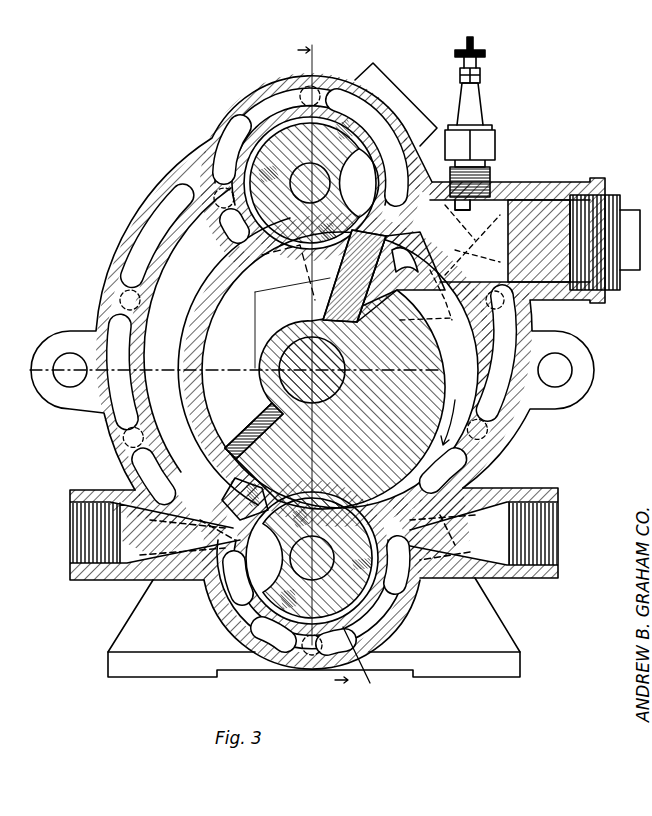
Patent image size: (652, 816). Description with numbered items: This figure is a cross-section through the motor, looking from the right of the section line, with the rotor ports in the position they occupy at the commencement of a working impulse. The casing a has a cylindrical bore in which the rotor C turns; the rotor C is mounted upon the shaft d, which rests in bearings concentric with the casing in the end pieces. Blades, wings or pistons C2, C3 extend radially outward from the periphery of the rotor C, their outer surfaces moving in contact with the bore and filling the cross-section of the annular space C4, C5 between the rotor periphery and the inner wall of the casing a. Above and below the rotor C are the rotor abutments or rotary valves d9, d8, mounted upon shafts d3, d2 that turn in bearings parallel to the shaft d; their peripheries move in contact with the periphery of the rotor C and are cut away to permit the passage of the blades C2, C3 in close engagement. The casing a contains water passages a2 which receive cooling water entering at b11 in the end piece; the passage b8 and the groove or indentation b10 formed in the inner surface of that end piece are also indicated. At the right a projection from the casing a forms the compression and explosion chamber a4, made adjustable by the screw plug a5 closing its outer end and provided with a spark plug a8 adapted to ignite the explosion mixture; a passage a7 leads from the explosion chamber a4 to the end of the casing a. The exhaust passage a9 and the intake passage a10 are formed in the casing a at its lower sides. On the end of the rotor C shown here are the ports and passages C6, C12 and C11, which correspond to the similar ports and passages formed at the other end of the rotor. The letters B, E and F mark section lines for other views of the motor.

The casing a is at (318, 375).
The water passages a2 is at (150, 243).
The explosion chamber a4 is at (505, 210).
The screw plug a5 is at (602, 188).
The passage a7 is at (470, 200).
The spark plug a8 is at (490, 145).
The exhaust passage a9 is at (545, 555).
The intake passage a10 is at (75, 556).
The water inlet b11 is at (396, 100).
The passage b8 is at (431, 301).
The groove b10 is at (228, 436).
The section line B- B is at (323, 310).
The rotor C is at (428, 383).
The piston C2 is at (238, 486).
The piston C3 is at (354, 220).
The annular space C4 is at (183, 324).
The annular space C5 is at (371, 477).
The passage C6 is at (398, 262).
The passage C11 is at (335, 262).
The passage C12 is at (222, 312).
The shaft d is at (277, 365).
The shaft d2 is at (292, 558).
The shaft d3 is at (306, 181).
The rotary valve d8 is at (380, 586).
The rotary valve d9 is at (267, 148).
The section line E- E is at (308, 364).
The section line F is at (381, 692).